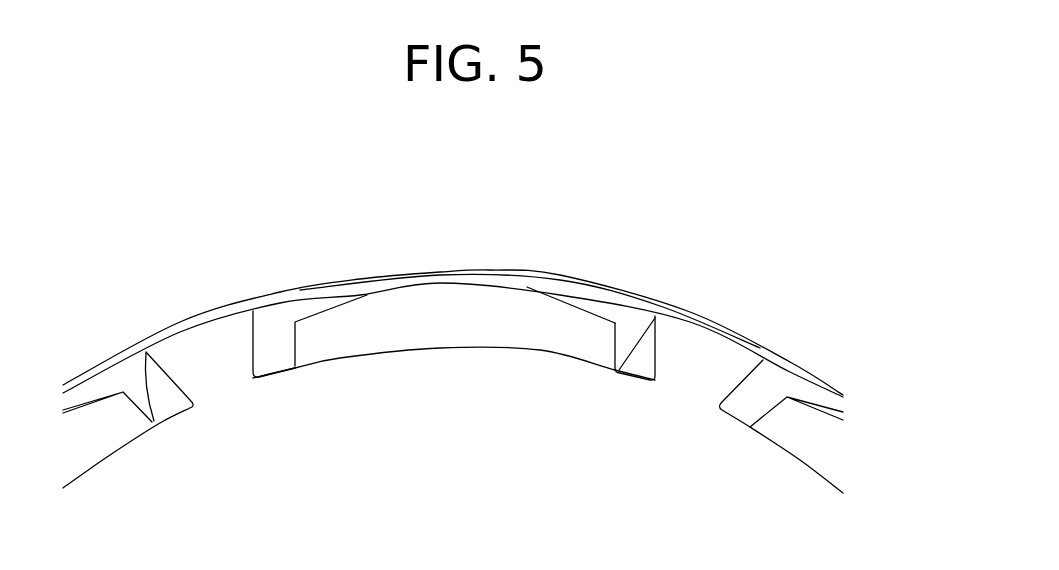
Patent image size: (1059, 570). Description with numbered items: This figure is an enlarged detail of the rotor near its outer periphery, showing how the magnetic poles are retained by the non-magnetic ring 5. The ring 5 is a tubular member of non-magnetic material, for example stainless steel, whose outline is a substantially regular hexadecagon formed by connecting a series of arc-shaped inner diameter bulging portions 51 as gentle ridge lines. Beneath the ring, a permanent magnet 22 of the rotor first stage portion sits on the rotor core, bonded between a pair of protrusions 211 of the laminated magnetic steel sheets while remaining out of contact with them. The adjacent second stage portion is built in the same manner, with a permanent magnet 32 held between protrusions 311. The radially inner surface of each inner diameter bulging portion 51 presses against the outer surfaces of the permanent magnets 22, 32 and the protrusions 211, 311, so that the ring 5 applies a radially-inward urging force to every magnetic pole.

The non-magnetic ring 5 is at (786, 361).
The inner diameter bulging portion 51 is at (502, 280).
The permanent magnet 22 is at (387, 317).
The permanent magnet 32 is at (270, 335).
The protrusion 311 is at (627, 327).
The protrusion 211 is at (687, 358).